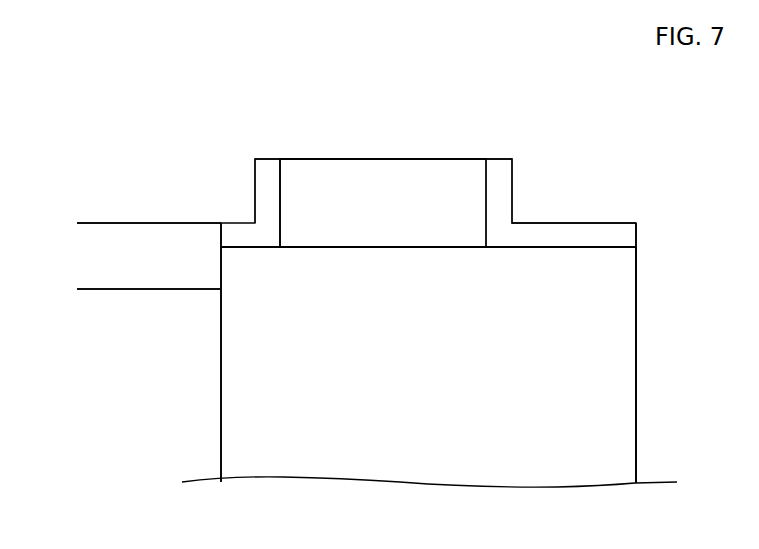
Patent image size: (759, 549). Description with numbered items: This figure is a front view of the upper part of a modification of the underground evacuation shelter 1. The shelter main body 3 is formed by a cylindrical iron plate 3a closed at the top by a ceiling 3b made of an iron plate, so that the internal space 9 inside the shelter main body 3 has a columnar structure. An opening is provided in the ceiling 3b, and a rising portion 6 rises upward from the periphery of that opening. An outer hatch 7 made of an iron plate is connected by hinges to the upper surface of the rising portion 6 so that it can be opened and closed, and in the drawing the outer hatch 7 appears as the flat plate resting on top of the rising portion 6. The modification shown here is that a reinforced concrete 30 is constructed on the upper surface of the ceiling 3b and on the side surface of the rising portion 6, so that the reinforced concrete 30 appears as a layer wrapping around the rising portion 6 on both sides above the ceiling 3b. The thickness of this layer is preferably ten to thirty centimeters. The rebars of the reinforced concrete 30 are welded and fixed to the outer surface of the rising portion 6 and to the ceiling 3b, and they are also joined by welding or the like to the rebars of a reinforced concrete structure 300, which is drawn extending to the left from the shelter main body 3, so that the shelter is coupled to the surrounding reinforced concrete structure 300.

The underground evacuation shelter 1 is at (272, 125).
The shelter main body 3 is at (680, 226).
The cylindrical iron plate 3a is at (636, 350).
The ceiling 3b is at (583, 248).
The rising portion 6 is at (437, 182).
The outer hatch 7 is at (380, 158).
The internal space 9 is at (237, 401).
The reinforced concrete 30 is at (269, 195).
The reinforced concrete structure 300 is at (147, 240).